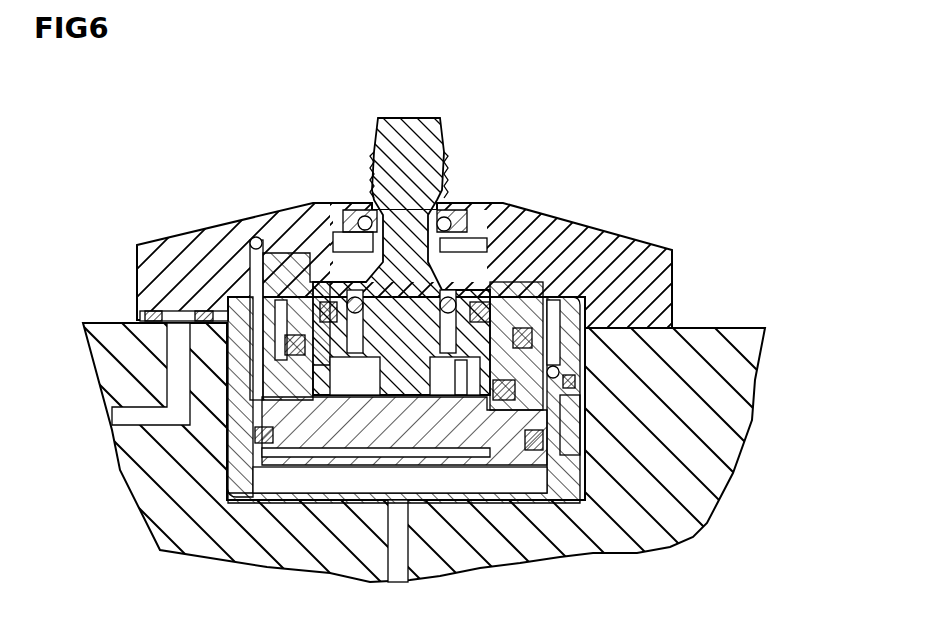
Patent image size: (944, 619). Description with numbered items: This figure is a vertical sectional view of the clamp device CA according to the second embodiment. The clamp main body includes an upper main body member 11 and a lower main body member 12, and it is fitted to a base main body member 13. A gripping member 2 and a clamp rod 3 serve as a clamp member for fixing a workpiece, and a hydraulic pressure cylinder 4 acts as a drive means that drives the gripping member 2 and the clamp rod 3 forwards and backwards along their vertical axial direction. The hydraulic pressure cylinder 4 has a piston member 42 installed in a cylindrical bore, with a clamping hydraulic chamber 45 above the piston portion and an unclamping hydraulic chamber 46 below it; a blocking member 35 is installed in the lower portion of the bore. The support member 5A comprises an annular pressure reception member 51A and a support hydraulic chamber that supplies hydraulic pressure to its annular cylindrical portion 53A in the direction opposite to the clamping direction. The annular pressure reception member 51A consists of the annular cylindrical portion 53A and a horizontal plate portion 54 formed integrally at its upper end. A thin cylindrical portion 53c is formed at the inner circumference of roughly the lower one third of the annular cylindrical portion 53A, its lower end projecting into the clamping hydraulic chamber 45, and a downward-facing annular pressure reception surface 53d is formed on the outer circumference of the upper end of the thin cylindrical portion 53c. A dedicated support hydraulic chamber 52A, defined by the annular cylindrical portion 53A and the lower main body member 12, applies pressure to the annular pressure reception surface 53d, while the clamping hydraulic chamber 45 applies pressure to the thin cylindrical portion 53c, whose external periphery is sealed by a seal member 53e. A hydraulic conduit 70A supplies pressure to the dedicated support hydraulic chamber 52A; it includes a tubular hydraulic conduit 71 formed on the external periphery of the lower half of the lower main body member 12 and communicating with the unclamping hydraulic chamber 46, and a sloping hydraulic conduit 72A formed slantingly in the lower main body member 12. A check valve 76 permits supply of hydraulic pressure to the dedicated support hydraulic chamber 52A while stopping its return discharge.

The clamp device CA is at (198, 172).
The gripping member 2 is at (446, 160).
The clamp rod 3 is at (428, 120).
The hydraulic pressure cylinder 4 is at (330, 481).
The support member 5A is at (445, 334).
The upper main body member 11 is at (600, 233).
The lower main body member 12 is at (240, 328).
The base main body member 13 is at (143, 467).
The blocking member 35 is at (410, 447).
The piston member 42 is at (504, 468).
The clamping hydraulic chamber 45 is at (290, 390).
The unclamping hydraulic chamber 46 is at (445, 481).
The annular pressure reception member 51A is at (503, 250).
The dedicated support hydraulic chamber 52A is at (560, 338).
The annular cylindrical portion 53A is at (503, 310).
The thin cylindrical portion 53c is at (490, 384).
The annular pressure reception surface 53d is at (503, 342).
The seal member 53e is at (287, 388).
The horizontal plate portion 54 is at (312, 265).
The hydraulic conduit 70A is at (570, 396).
The tubular hydraulic conduit 71 is at (575, 490).
The sloping hydraulic conduit 72A is at (573, 435).
The check valve 76 is at (562, 362).